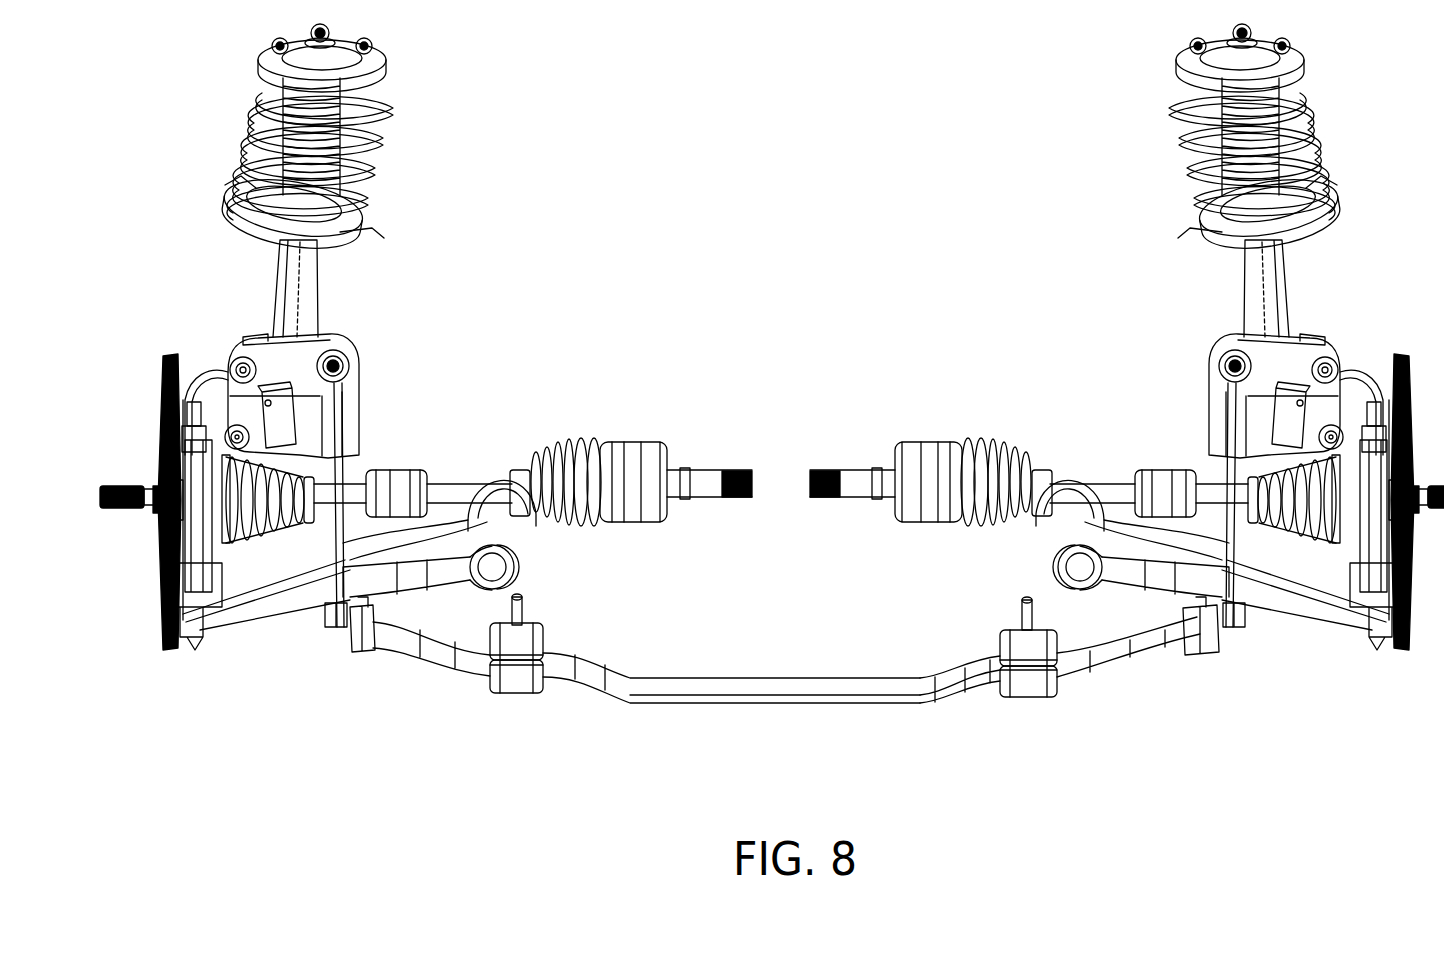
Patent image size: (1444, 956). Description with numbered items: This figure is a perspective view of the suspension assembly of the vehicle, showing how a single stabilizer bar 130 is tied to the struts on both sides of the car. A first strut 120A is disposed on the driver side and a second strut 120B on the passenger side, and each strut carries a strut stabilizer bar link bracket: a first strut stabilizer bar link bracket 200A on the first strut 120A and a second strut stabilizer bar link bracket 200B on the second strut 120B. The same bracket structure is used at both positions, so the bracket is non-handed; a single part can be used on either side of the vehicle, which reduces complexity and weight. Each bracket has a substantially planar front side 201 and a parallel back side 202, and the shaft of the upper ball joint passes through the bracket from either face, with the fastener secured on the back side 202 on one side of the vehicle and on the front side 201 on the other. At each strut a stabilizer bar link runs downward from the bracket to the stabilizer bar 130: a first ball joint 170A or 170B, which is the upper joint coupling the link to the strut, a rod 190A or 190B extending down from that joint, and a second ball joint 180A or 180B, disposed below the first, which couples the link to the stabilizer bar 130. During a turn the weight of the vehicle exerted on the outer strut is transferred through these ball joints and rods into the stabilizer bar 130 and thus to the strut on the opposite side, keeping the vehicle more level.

The first strut 120A is at (307, 253).
The second strut 120B is at (1258, 283).
The stabilizer bar 130 is at (892, 687).
The first ball joint 170A is at (356, 368).
The first ball joint 170B is at (1215, 375).
The second ball joint 180A is at (337, 627).
The second ball joint 180B is at (1232, 634).
The rod 190A is at (342, 445).
The rod 190B is at (1233, 427).
The first strut stabilizer bar link bracket 200A is at (355, 356).
The second strut stabilizer bar link bracket 200B is at (1220, 358).
The front side 201 is at (1260, 347).
The back side 202 is at (337, 352).